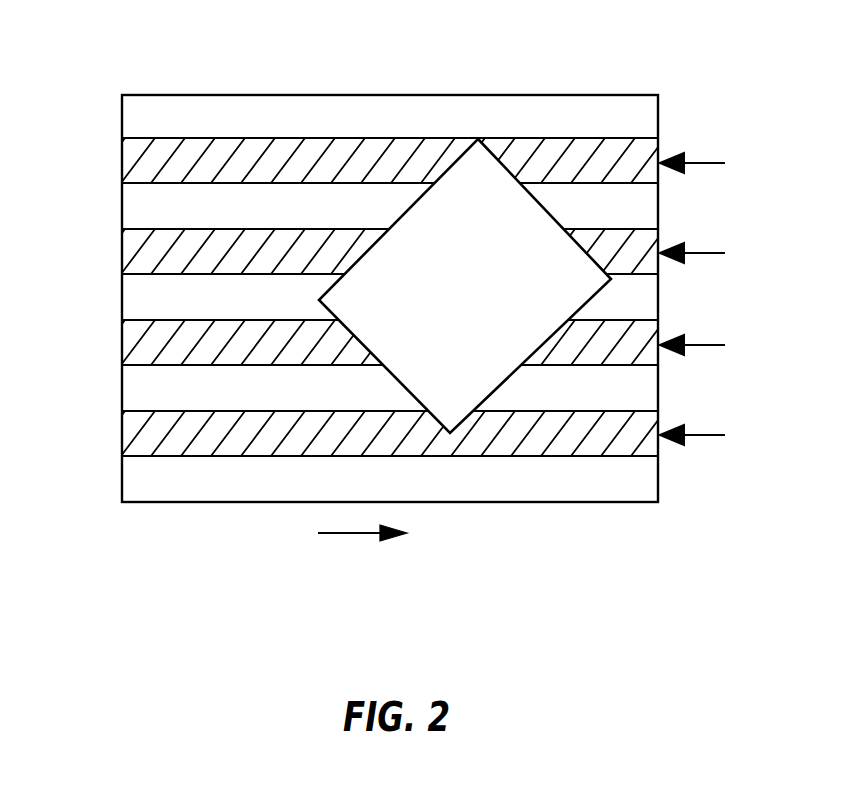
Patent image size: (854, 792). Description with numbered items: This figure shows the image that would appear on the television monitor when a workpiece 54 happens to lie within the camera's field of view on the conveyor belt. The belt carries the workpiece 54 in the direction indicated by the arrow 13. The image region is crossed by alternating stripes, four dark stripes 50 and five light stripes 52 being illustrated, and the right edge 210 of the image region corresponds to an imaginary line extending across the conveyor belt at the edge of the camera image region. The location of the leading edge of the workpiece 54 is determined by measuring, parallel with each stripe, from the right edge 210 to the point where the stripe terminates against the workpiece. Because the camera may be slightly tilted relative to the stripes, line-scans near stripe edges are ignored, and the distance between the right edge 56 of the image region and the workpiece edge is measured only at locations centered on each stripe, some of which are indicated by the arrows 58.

The arrows 13 is at (367, 536).
The absorbing layers 50 is at (122, 160).
The transparent layers 52 is at (122, 114).
The workpiece 54 is at (478, 139).
The right edge of the image region 56 is at (660, 121).
The arrows 58 is at (697, 165).
The right edge of the image region 210 is at (650, 480).